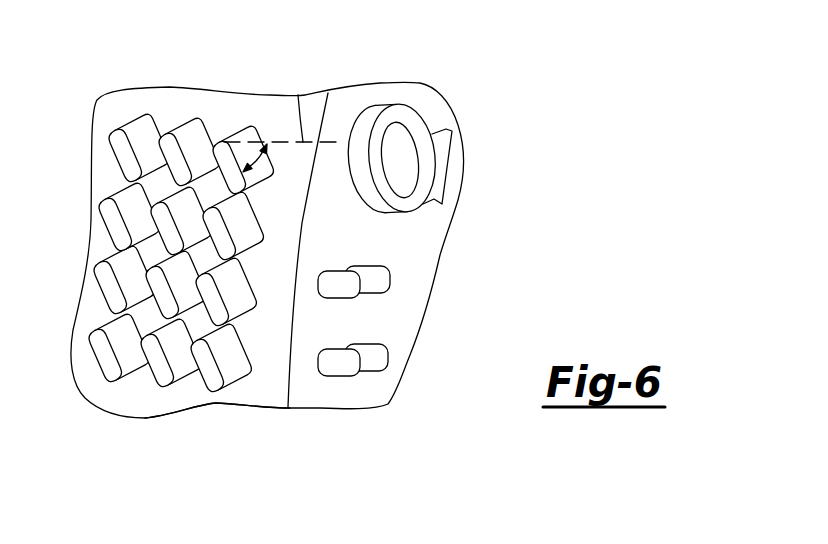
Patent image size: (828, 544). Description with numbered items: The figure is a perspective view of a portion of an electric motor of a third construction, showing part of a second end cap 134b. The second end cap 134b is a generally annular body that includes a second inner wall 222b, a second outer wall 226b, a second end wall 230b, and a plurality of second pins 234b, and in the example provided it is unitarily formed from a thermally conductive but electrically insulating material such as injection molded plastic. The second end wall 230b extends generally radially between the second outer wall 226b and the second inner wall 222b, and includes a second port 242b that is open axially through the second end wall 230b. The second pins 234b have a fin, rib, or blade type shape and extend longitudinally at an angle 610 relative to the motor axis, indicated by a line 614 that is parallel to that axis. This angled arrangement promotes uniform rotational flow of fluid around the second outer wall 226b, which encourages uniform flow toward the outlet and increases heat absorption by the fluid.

The line 614 is at (298, 93).
The angle 610 is at (262, 163).
The second end cap 134b is at (428, 103).
The second port 242b is at (413, 150).
The second inner wall 222b is at (420, 264).
The second pins 234b is at (160, 367).
The second outer wall 226b is at (197, 393).
The second end wall 230b is at (328, 333).